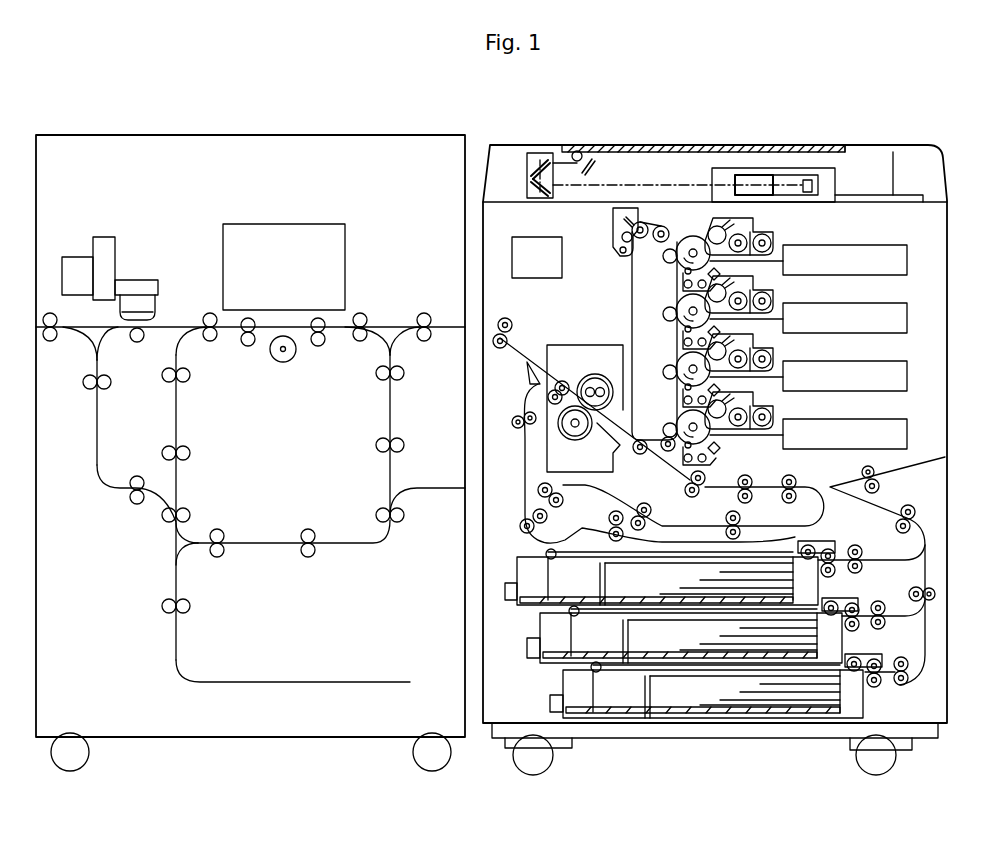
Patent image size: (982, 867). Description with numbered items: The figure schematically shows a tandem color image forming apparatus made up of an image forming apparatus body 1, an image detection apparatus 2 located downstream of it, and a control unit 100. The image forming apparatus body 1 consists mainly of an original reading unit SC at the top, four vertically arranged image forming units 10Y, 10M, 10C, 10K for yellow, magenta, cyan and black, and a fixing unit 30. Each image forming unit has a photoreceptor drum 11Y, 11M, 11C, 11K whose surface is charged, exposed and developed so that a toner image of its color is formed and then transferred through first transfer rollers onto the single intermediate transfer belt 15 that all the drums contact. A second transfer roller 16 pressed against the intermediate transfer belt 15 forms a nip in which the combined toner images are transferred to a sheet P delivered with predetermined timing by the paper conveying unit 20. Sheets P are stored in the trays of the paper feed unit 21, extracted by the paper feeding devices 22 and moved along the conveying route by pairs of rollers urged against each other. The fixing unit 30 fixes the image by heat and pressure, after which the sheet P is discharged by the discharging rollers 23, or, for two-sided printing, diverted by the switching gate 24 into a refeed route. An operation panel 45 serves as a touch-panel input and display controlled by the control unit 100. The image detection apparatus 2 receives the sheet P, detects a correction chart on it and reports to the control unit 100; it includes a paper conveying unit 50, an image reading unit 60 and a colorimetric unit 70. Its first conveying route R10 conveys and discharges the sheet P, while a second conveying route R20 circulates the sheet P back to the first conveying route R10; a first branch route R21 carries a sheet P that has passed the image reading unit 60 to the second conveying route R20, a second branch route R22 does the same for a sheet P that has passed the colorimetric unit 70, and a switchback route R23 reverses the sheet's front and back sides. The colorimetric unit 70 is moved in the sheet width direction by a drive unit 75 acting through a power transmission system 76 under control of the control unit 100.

The image forming apparatus body 1 is at (904, 142).
The image detection apparatus 2 is at (276, 135).
The original reading unit SC is at (691, 186).
The operation panel 45 is at (862, 194).
The control unit 100 is at (575, 252).
The intermediate transfer belt 15 is at (631, 283).
The discharging rollers 23 is at (510, 325).
The switching gate 24 is at (548, 380).
The fixing unit 30 is at (623, 296).
The second transfer roller 16 is at (641, 452).
The paper conveying unit 20 is at (542, 552).
The paper feed unit 21 is at (527, 600).
The paper feeding devices 22 is at (838, 548).
The sheet P is at (757, 573).
The image forming unit for yellow 10Y is at (786, 236).
The image forming unit for magenta 10M is at (786, 294).
The image forming unit for cyan 10C is at (786, 352).
The image forming unit for black 10K is at (786, 410).
The photoreceptor drum for yellow 11Y is at (690, 238).
The photoreceptor drum for magenta 11M is at (686, 302).
The photoreceptor drum for cyan 11C is at (686, 360).
The photoreceptor drum for black 11K is at (686, 418).
The paper conveying unit 50 is at (392, 318).
The image reading unit 60 is at (298, 224).
The colorimetric unit 70 is at (158, 283).
The drive unit 75 is at (73, 257).
The power transmission system 76 is at (115, 240).
The first conveying route R10 is at (347, 333).
The second conveying route R20 is at (272, 543).
The first branch route R21 is at (176, 412).
The second branch route R22 is at (96, 468).
The switchback route R23 is at (292, 682).